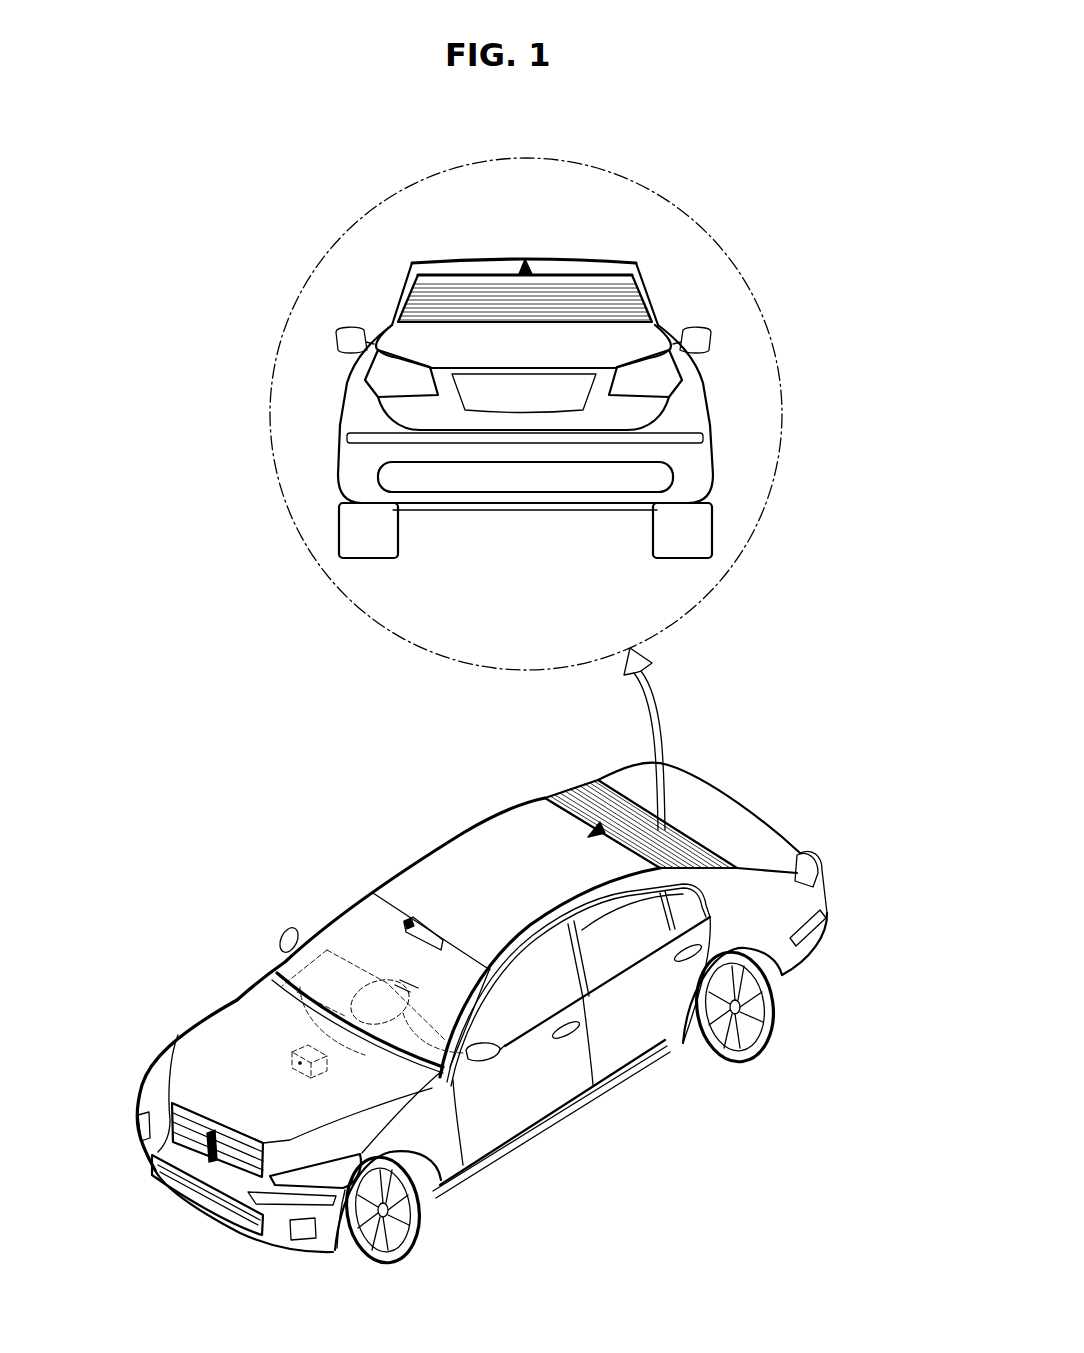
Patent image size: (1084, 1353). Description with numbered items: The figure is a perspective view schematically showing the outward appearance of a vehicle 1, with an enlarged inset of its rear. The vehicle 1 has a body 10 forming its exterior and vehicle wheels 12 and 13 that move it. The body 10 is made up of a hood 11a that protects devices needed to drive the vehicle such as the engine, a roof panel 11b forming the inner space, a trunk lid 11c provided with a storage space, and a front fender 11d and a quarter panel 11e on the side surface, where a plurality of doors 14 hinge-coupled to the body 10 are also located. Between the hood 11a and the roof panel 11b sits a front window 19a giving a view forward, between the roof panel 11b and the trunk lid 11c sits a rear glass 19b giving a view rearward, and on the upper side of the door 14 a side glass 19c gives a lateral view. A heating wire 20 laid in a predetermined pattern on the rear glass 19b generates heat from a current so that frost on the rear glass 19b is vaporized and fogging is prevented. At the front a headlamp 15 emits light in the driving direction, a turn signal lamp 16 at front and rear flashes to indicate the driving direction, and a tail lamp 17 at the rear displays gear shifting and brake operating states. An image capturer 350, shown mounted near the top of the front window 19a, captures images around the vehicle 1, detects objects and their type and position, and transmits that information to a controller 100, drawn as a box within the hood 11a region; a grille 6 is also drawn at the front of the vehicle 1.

The vehicle 1 is at (501, 990).
The body 10 is at (507, 795).
The hood 11a is at (218, 1038).
The roof panel 11b is at (451, 856).
The trunk lid 11c is at (709, 801).
The front fender 11d is at (439, 1161).
The quarter panel 11e is at (781, 948).
The vehicle wheel 12 is at (413, 1232).
The vehicle wheel 13 is at (756, 1038).
The door 14 is at (548, 1091).
The headlamp 15 is at (157, 1068).
The turn signal lamp 16 is at (823, 925).
The tail lamp 17 is at (808, 869).
The front window 19a is at (368, 910).
The rear glass 19b is at (442, 279).
The side glass 19c is at (613, 945).
The heating wire 20 is at (428, 298).
The controller 100 is at (305, 1055).
The image capturer 350 is at (407, 920).
The grille 6 is at (196, 1126).